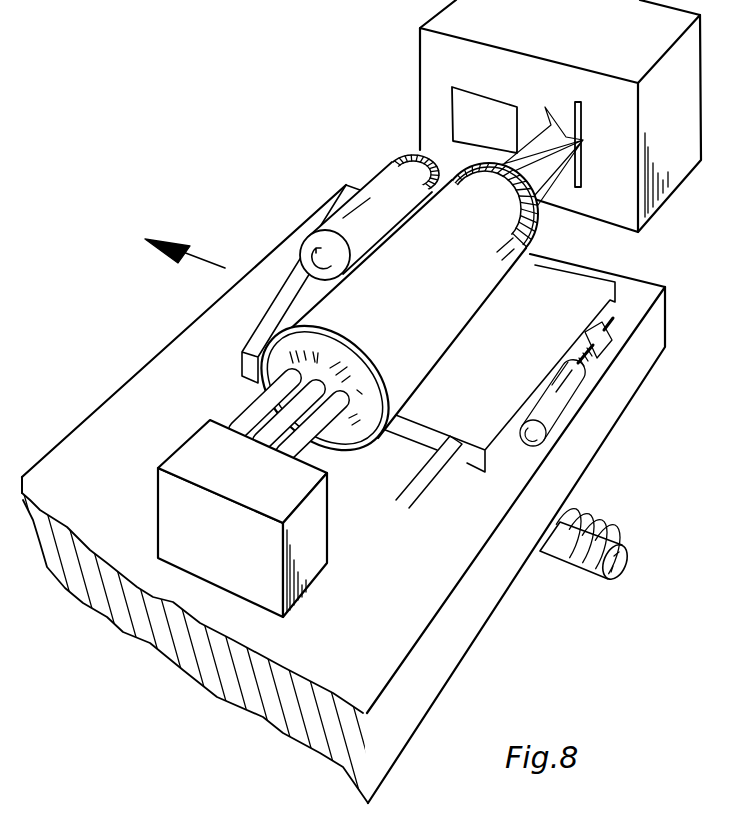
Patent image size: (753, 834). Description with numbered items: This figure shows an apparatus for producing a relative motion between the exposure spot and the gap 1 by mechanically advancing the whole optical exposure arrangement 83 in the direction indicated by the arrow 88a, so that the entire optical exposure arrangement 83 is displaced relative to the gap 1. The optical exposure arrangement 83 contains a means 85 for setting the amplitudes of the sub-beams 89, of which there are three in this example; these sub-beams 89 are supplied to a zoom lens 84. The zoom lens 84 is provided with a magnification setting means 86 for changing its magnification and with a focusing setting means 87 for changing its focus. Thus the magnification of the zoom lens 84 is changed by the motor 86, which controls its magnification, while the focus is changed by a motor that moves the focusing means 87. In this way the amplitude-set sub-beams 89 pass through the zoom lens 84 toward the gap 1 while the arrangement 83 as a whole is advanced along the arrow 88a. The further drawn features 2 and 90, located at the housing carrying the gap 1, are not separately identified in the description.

The gap 1 is at (588, 187).
The window 2 is at (463, 118).
The slit / light beam 90 is at (550, 112).
The optical exposure arrangement 83 is at (88, 435).
The zoom lens 84 is at (413, 346).
The means for setting the amplitudes of the sub-beams 85 is at (310, 537).
The magnification setting means 86 is at (368, 195).
The focusing setting means 87 is at (570, 286).
The arrow 88a is at (180, 247).
The sub-beams 89 is at (302, 430).